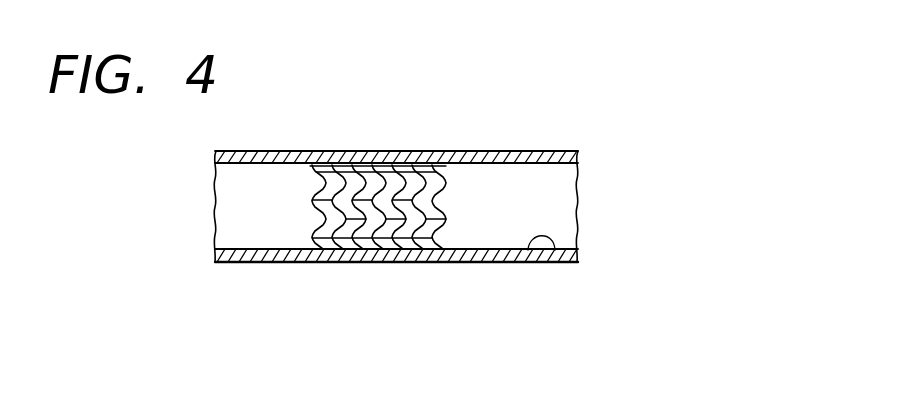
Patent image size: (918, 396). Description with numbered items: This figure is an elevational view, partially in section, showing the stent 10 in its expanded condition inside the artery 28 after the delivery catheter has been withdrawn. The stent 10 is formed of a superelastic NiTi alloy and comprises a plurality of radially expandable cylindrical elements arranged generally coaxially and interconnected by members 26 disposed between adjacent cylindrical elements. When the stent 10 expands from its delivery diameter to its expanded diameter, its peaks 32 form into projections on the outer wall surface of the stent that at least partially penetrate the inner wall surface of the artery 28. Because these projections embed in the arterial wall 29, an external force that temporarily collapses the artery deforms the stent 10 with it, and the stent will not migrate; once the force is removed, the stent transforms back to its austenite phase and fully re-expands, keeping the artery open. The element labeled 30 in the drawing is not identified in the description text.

The stent-graft assembly 10 is at (386, 219).
The inner graft layer 26 is at (355, 263).
The outer graft layer 28 is at (417, 263).
The bond region 29 is at (530, 250).
The graft tube wall 30 is at (374, 156).
The stent ring 32 is at (433, 193).